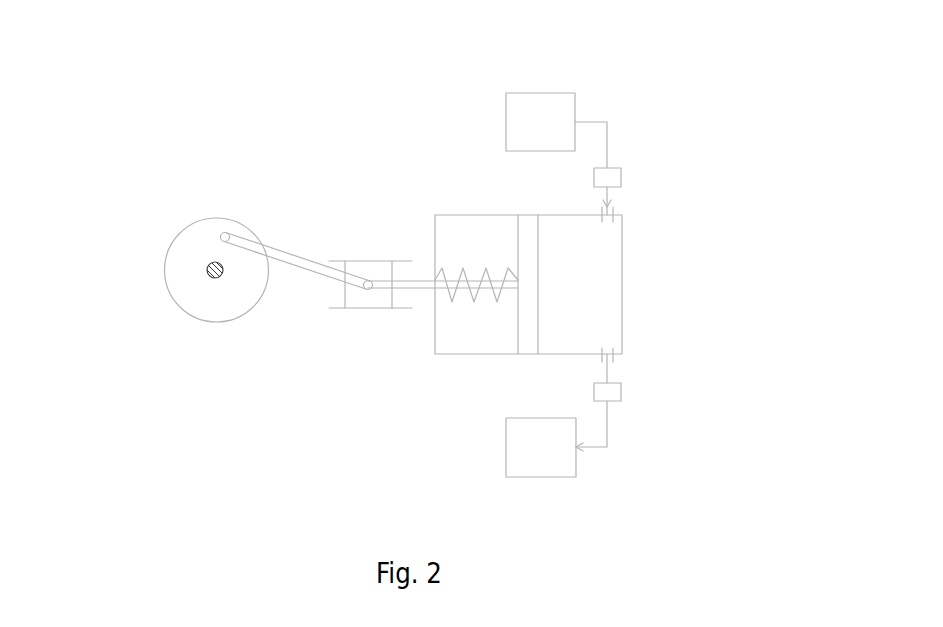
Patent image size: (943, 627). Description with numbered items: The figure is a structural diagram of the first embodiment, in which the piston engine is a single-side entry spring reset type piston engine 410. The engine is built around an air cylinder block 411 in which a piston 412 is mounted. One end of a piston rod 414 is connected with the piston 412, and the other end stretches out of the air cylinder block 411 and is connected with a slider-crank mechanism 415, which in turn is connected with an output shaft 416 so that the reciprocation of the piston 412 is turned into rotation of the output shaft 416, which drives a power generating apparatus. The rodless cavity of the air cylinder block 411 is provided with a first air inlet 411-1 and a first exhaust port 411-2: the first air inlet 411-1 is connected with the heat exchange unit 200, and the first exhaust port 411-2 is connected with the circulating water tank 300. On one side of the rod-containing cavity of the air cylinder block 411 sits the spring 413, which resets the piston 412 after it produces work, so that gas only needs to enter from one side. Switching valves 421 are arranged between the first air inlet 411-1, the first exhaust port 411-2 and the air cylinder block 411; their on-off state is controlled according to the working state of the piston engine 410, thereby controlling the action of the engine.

The heat exchange unit 200 is at (557, 127).
The circulating water tank 300 is at (578, 448).
The single-side entry spring reset type piston engine 410 is at (387, 177).
The air cylinder block 411 is at (580, 298).
The first air inlet 411-1 is at (614, 207).
The first exhaust port 411-2 is at (618, 355).
The piston 412 is at (530, 292).
The spring 413 is at (473, 297).
The piston rod 414 is at (412, 283).
The slider-crank mechanism 415 is at (313, 268).
The output shaft 416 is at (213, 280).
The switching valve 421 is at (605, 180).